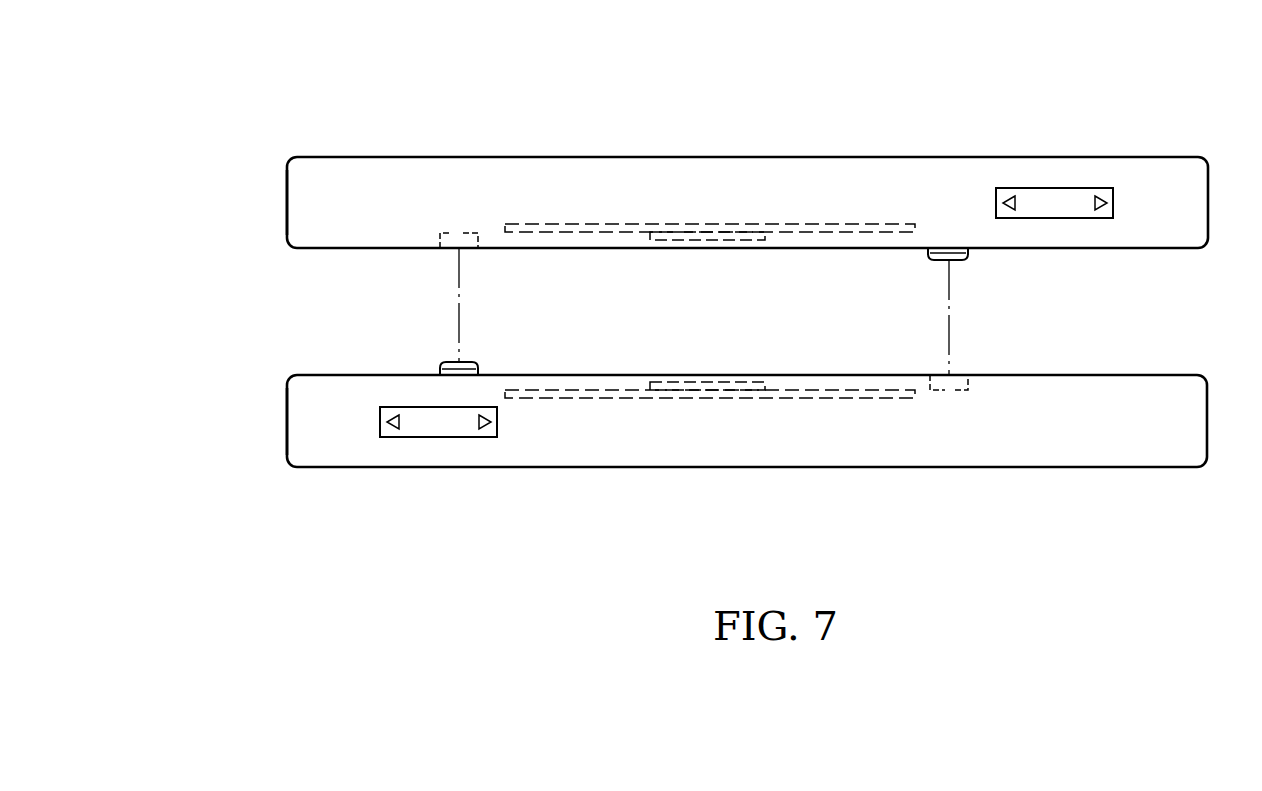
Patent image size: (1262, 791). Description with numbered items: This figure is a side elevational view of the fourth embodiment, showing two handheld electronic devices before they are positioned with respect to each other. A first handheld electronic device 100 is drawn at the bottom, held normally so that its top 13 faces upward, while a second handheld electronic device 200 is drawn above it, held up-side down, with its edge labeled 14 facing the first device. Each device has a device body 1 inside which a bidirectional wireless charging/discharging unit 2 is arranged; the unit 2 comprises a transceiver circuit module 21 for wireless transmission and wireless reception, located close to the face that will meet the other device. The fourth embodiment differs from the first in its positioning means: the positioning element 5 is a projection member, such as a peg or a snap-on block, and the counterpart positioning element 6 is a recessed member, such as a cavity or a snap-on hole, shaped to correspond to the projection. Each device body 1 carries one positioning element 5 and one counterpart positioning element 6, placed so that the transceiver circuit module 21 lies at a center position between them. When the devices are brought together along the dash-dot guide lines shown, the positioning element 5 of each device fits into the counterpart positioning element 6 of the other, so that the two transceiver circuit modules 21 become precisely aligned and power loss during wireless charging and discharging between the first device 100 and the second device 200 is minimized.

The device body 1 is at (397, 178).
The bidirectional wireless charging/discharging unit 2 is at (814, 232).
The transceiver circuit module 21 is at (694, 238).
The positioning element 5 is at (440, 368).
The counterpart positioning element 6 is at (448, 240).
The top 13 is at (287, 404).
The upper housing 14 is at (287, 200).
The first handheld electronic device 100 is at (1194, 484).
The second handheld electronic device 200 is at (1193, 140).